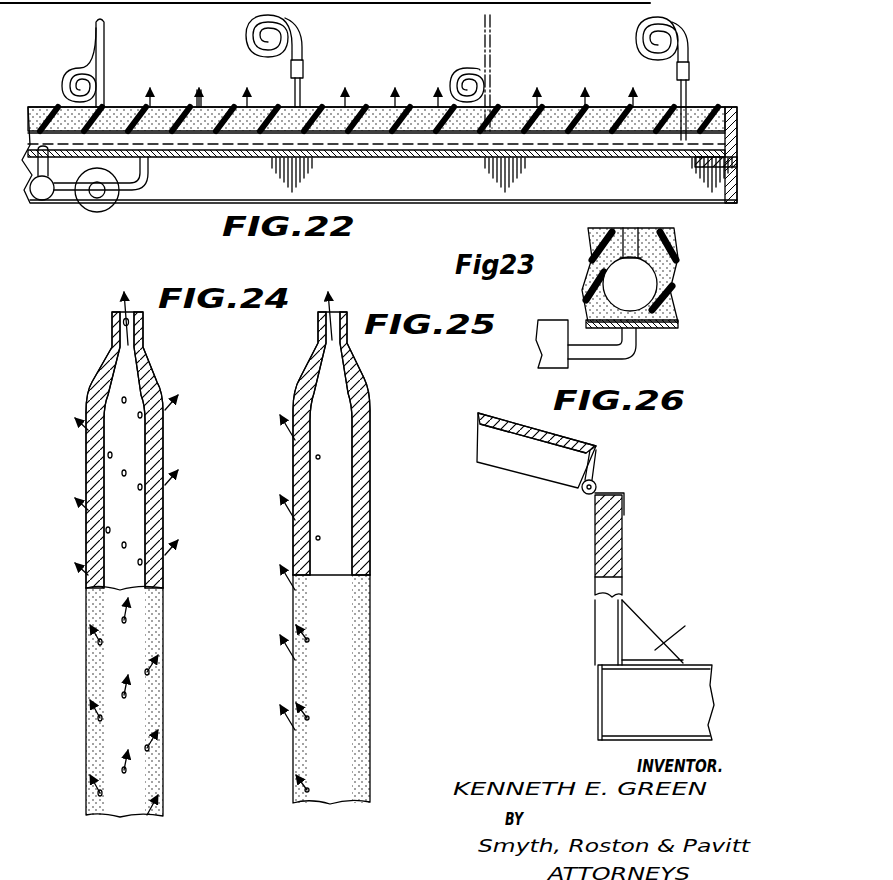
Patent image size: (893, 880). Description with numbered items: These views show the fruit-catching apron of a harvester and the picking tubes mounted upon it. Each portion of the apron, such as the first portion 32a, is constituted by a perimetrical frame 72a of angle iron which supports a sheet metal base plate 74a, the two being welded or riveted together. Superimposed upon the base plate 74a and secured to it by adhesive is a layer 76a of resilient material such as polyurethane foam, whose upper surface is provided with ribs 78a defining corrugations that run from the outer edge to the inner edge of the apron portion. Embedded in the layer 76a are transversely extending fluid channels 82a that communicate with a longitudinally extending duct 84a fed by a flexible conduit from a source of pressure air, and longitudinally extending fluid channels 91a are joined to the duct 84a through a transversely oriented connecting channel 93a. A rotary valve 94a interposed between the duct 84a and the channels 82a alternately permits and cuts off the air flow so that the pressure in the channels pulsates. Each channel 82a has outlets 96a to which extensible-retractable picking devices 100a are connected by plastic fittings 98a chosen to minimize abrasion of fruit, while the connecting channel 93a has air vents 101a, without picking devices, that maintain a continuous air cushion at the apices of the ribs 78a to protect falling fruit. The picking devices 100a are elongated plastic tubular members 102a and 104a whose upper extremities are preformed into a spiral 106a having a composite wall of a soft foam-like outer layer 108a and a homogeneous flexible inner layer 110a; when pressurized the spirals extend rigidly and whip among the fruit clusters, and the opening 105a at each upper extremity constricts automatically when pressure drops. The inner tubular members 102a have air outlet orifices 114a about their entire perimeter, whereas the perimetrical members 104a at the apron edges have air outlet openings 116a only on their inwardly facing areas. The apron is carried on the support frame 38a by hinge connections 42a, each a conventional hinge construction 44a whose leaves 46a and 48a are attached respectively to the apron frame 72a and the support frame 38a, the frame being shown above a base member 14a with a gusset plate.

In FIG. 26, the base beam 14a is at (596, 685).
In FIG. 26, the first portion of the catching apron 32a is at (540, 475).
In FIG. 26, the support frame 38a is at (600, 545).
In FIG. 26, the hinge connection 42a is at (580, 495).
In FIG. 26, the hinge construction 44a is at (597, 483).
In FIG. 26, the hinge leaf 46a is at (598, 455).
In FIG. 26, the hinge leaf 48a is at (626, 502).
In FIG. 22, the perimetrical frame 72a is at (728, 175).
In FIG. 23, the perimetrical frame 72a is at (696, 215).
In FIG. 26, the perimetrical frame 72a is at (520, 458).
In FIG. 22, the base plate 74a is at (440, 158).
In FIG. 26, the base plate 74a is at (535, 432).
In FIG. 22, the layer of resilient material 76a is at (700, 107).
In FIG. 22, the ribs 78a is at (560, 107).
In FIG. 23, the ribs 78a is at (598, 227).
In FIG. 22, the transversely extending fluid channels 82a is at (368, 153).
In FIG. 23, the transversely extending fluid channels 82a is at (662, 298).
In FIG. 22, the longitudinally extending duct 84a is at (105, 210).
In FIG. 23, the longitudinally extending duct 84a is at (556, 319).
In FIG. 22, the longitudinally extending fluid channels 91a is at (200, 133).
In FIG. 23, the longitudinally extending fluid channels 91a is at (655, 270).
In FIG. 22, the connecting channel 93a is at (145, 175).
In FIG. 23, the connecting channel 93a is at (640, 340).
In FIG. 22, the rotary valve 94a is at (42, 200).
In FIG. 22, the outlets 96a is at (160, 107).
In FIG. 23, the outlets 96a is at (655, 228).
In FIG. 22, the fittings 98a is at (301, 95).
In FIG. 22, the extensible-retractable picking devices 100a is at (78, 62).
In FIG. 22, the air outlets or vents 101a is at (200, 100).
In FIG. 23, the air outlets or vents 101a is at (632, 225).
In FIG. 22, the elongated tubular member 102a is at (303, 50).
In FIG. 24, the elongated tubular member 102a is at (168, 695).
In FIG. 22, the elongated tubular member 104a is at (690, 45).
In FIG. 25, the elongated tubular member 104a is at (335, 657).
In FIG. 24, the opening 105a is at (118, 327).
In FIG. 22, the spiral 106a is at (252, 36).
In FIG. 24, the spiral 106a is at (162, 618).
In FIG. 25, the spiral 106a is at (368, 528).
In FIG. 24, the outer layer 108a is at (158, 395).
In FIG. 25, the outer layer 108a is at (362, 445).
In FIG. 24, the inner layer 110a is at (155, 375).
In FIG. 25, the inner layer 110a is at (360, 390).
In FIG. 24, the air outlet orifices 114a is at (158, 418).
In FIG. 25, the air outlet openings 116a is at (293, 440).